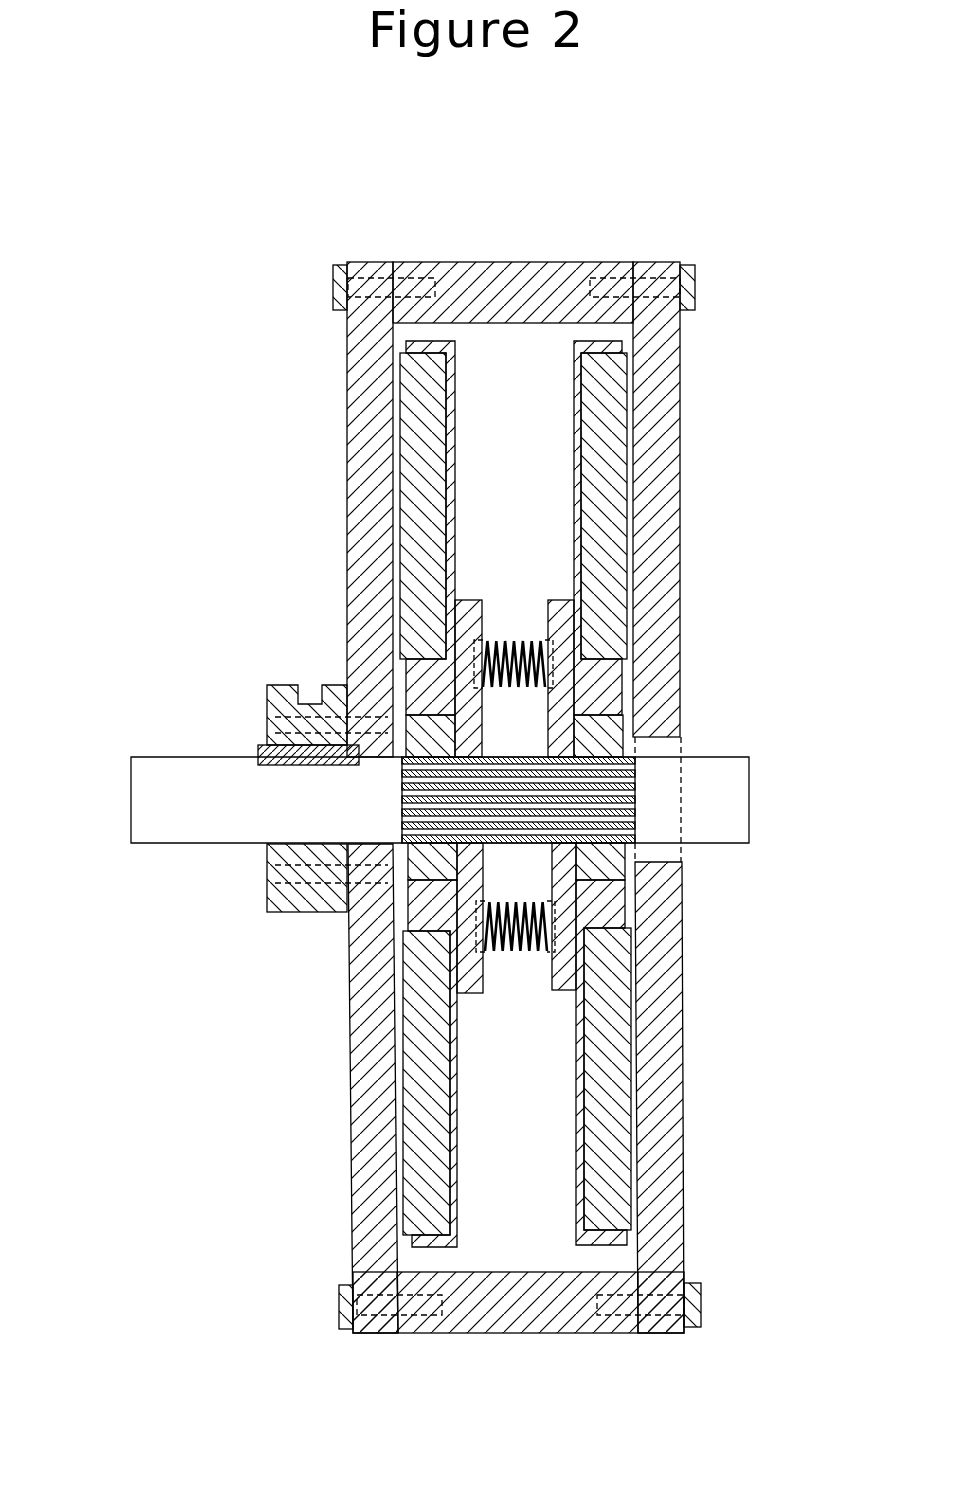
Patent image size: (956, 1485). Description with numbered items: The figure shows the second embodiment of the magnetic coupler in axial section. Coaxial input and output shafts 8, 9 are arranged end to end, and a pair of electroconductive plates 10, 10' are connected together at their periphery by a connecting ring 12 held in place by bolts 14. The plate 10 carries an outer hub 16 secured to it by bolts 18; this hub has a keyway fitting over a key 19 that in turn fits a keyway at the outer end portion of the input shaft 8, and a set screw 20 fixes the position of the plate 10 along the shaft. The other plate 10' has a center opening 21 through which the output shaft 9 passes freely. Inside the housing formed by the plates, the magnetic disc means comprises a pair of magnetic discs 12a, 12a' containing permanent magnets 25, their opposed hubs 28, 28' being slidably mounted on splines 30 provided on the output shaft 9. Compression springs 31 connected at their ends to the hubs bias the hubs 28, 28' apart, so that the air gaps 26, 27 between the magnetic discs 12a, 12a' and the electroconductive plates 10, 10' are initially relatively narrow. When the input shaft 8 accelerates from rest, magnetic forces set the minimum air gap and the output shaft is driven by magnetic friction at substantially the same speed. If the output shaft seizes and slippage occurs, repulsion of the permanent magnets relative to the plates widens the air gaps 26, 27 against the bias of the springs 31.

The input shaft 8 is at (129, 800).
The output shaft 9 is at (751, 799).
The electroconductive plate 10 is at (297, 789).
The electroconductive plate 10' is at (726, 794).
The connecting ring 12 is at (548, 258).
The magnetic disc 12a is at (398, 403).
The magnetic disc 12a' is at (653, 402).
The bolts 14 is at (338, 1307).
The outer hub 16 is at (312, 912).
The bolts 18 is at (253, 717).
The key 19 is at (230, 743).
The set screw 20 is at (307, 682).
The center opening 21 is at (682, 727).
The permanent magnets 25 is at (432, 1128).
The air gap 26 is at (395, 1047).
The air gap 27 is at (632, 1181).
The hub 28 is at (478, 719).
The hub 28' is at (540, 741).
The splines 30 is at (527, 846).
The compression springs 31 is at (517, 953).